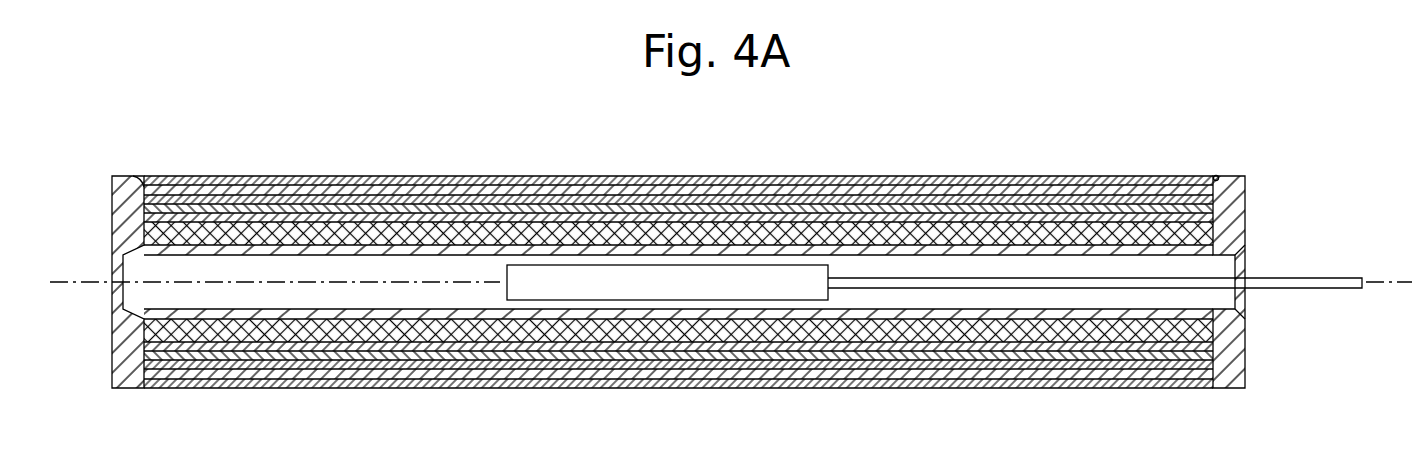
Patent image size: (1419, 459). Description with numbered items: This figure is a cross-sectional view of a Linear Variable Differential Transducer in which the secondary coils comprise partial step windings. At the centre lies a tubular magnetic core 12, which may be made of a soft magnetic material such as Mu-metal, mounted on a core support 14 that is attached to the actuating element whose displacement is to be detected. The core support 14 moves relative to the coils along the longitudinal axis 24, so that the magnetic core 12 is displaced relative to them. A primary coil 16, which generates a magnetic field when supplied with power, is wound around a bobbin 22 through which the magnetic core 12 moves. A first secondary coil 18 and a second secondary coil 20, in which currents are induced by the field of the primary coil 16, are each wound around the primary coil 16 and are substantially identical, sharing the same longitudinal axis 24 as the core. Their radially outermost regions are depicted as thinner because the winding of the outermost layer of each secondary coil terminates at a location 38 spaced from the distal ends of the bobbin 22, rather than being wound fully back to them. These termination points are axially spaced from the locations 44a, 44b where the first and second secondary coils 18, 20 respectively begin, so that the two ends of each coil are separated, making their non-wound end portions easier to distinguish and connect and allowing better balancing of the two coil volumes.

The magnetic core 12 is at (722, 277).
The core support 14 is at (1274, 278).
The primary coil 16 is at (1040, 223).
The first secondary coil 18 is at (918, 206).
The second secondary coil 20 is at (425, 196).
The bobbin 22 is at (1240, 176).
The longitudinal axis 24 is at (1389, 279).
The winding termination location 38 is at (1180, 181).
The winding start location of the first secondary coil 44a is at (1216, 176).
The winding start location of the second secondary coil 44b is at (134, 177).